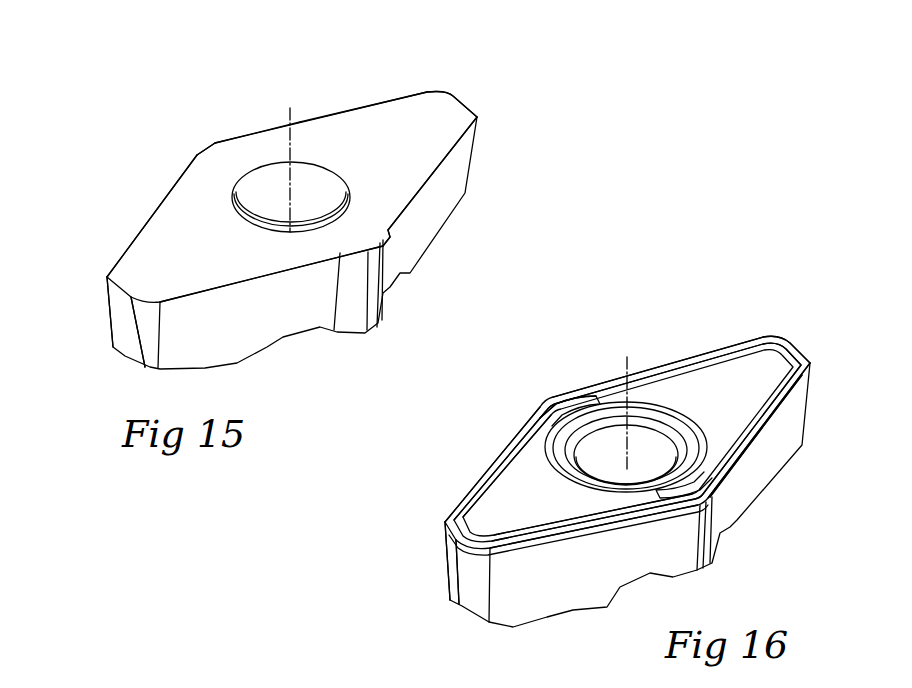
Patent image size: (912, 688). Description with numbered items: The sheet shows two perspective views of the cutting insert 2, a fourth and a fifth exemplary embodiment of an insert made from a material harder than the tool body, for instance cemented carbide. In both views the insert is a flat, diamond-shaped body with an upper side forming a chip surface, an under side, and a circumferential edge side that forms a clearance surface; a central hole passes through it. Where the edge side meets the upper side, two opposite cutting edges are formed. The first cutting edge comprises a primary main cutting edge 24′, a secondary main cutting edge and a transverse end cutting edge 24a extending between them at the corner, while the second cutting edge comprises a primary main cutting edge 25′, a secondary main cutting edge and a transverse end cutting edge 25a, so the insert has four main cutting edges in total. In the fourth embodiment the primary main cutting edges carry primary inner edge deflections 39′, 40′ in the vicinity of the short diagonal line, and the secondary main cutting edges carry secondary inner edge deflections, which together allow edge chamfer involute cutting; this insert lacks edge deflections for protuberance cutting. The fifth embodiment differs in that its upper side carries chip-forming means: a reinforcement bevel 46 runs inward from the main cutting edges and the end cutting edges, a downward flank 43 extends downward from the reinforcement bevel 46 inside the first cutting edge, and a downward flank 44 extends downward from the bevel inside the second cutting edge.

In FIG. 15, the cutting insert 2 is at (314, 88).
In FIG. 16, the cutting insert 2 is at (611, 319).
In FIG. 15, the primary main cutting edge 24′ is at (243, 282).
In FIG. 16, the primary main cutting edge 24′ is at (605, 523).
In FIG. 15, the transverse end cutting edge 24a is at (126, 296).
In FIG. 16, the transverse end cutting edge 24a is at (470, 547).
In FIG. 15, the primary main cutting edge 25′ is at (358, 108).
In FIG. 16, the primary main cutting edge 25′ is at (702, 353).
In FIG. 15, the transverse end cutting edge 25a is at (460, 100).
In FIG. 16, the transverse end cutting edge 25a is at (798, 350).
In FIG. 15, the primary inner edge deflection 39′ is at (353, 257).
In FIG. 15, the primary inner edge deflection 40′ is at (230, 142).
In FIG. 16, the downward flank 43 is at (470, 503).
In FIG. 16, the downward flank 44 is at (617, 383).
In FIG. 16, the reinforcement bevel 46 is at (672, 366).